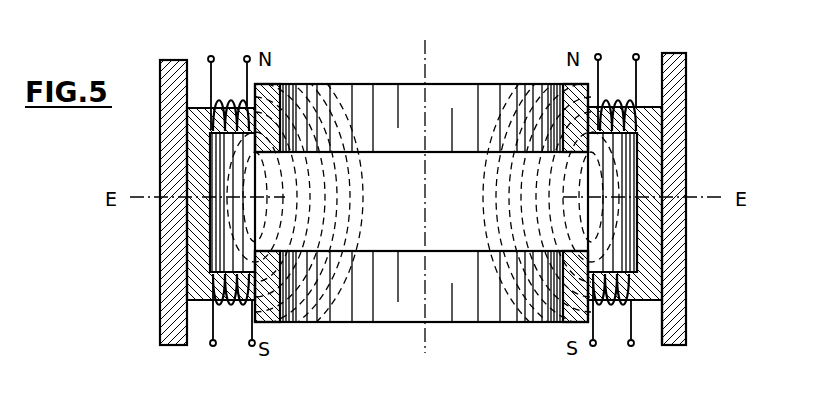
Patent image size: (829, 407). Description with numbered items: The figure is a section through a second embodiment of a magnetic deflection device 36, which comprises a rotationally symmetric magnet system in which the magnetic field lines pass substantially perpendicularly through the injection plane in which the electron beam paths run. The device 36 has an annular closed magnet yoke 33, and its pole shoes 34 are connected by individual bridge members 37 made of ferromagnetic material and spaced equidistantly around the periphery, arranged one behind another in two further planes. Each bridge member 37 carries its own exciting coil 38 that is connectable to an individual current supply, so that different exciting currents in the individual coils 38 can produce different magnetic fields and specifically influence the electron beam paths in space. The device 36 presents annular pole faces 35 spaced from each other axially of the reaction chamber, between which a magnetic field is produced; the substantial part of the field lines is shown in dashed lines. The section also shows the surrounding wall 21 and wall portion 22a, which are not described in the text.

The housing wall 21 is at (672, 61).
The housing wall portion 22a is at (656, 320).
The magnet yoke 33 is at (652, 152).
The pole shoes 34 is at (558, 100).
The annular pole faces 35 is at (288, 113).
The deflection device 36 is at (472, 76).
The bridge members 37 is at (627, 117).
The exciting coil 38 is at (232, 92).